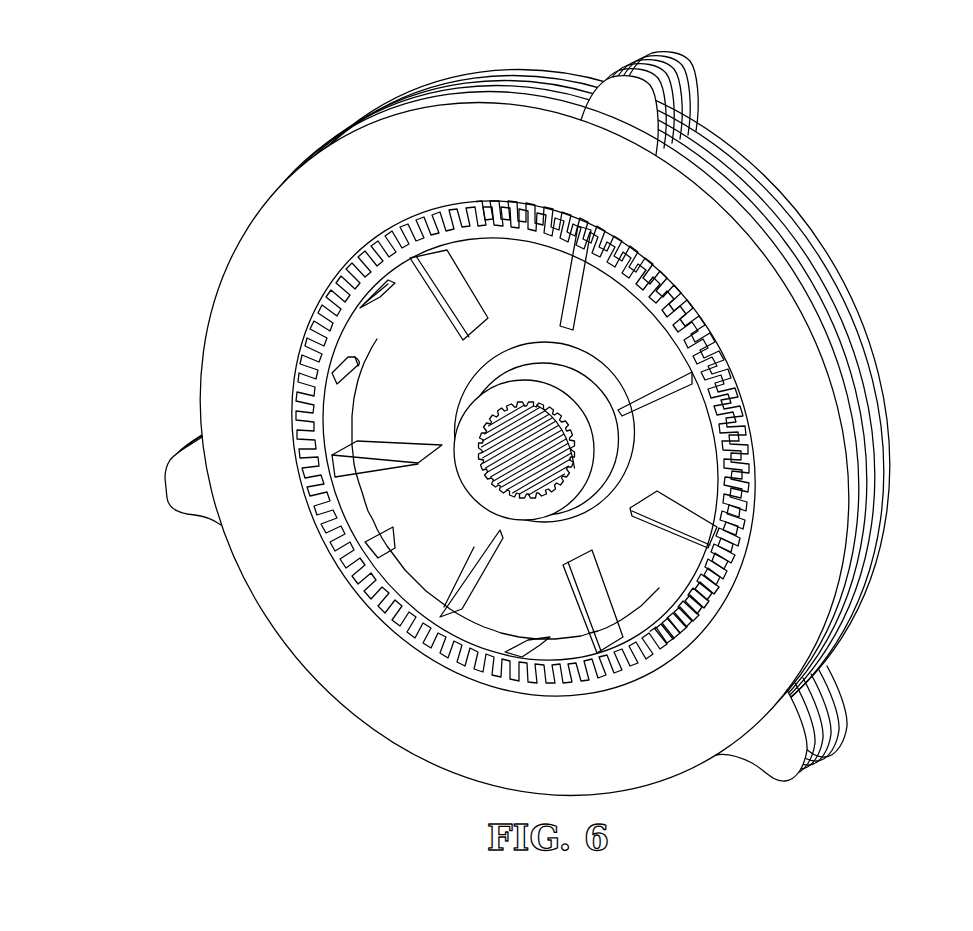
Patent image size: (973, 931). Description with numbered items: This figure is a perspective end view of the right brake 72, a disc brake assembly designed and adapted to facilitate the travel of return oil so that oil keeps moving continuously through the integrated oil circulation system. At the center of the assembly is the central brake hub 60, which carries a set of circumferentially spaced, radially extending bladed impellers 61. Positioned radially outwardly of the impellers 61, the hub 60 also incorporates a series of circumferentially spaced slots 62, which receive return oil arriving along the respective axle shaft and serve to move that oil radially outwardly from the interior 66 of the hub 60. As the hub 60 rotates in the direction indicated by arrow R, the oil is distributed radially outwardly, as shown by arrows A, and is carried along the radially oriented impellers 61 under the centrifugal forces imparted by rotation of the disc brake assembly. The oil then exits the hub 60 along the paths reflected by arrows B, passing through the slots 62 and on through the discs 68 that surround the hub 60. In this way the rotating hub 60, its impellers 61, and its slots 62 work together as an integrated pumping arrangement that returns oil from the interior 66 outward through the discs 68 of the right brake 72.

The right brake 72 is at (806, 200).
The discs 68 is at (803, 428).
The central brake hub 60 is at (577, 558).
The bladed impellers 61 is at (563, 297).
The slots 62 is at (382, 292).
The interior of the hub 66 is at (556, 434).
The arrows A is at (361, 457).
The arrows B is at (528, 630).
The arrow R is at (318, 128).